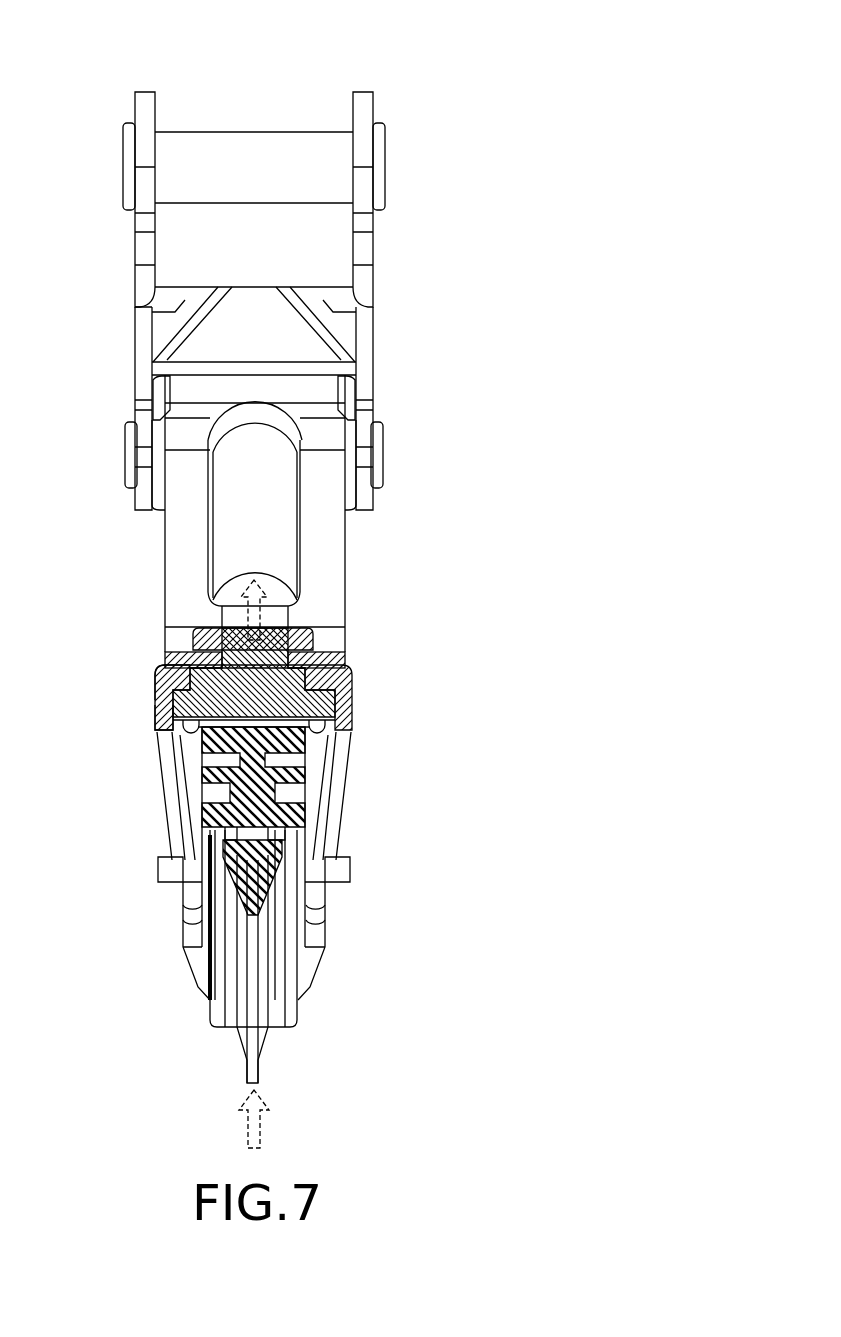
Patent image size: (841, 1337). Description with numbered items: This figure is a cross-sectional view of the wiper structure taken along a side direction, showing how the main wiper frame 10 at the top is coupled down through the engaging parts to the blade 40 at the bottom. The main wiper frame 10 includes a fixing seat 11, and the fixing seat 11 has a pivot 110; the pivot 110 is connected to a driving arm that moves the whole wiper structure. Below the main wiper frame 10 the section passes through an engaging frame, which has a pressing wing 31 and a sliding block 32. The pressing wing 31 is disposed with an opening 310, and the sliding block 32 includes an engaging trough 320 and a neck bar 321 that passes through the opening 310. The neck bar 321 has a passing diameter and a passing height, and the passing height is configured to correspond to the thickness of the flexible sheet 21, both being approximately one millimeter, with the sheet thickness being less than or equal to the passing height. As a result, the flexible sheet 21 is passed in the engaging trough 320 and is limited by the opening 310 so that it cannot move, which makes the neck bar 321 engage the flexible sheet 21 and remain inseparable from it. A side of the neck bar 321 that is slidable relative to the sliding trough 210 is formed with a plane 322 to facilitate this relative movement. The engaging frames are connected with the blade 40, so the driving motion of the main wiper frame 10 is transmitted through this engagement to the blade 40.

The main wiper frame 10 is at (383, 315).
The fixing seat 11 is at (365, 113).
The pivot 110 is at (230, 147).
The flexible sheet 21 is at (165, 655).
The sliding trough 210 is at (228, 652).
The pressing wing 31 is at (157, 673).
The opening 310 is at (165, 723).
The sliding block 32 is at (297, 622).
The engaging trough 320 is at (352, 692).
The neck bar 321 is at (313, 628).
The plane 322 is at (345, 655).
The blade 40 is at (257, 875).